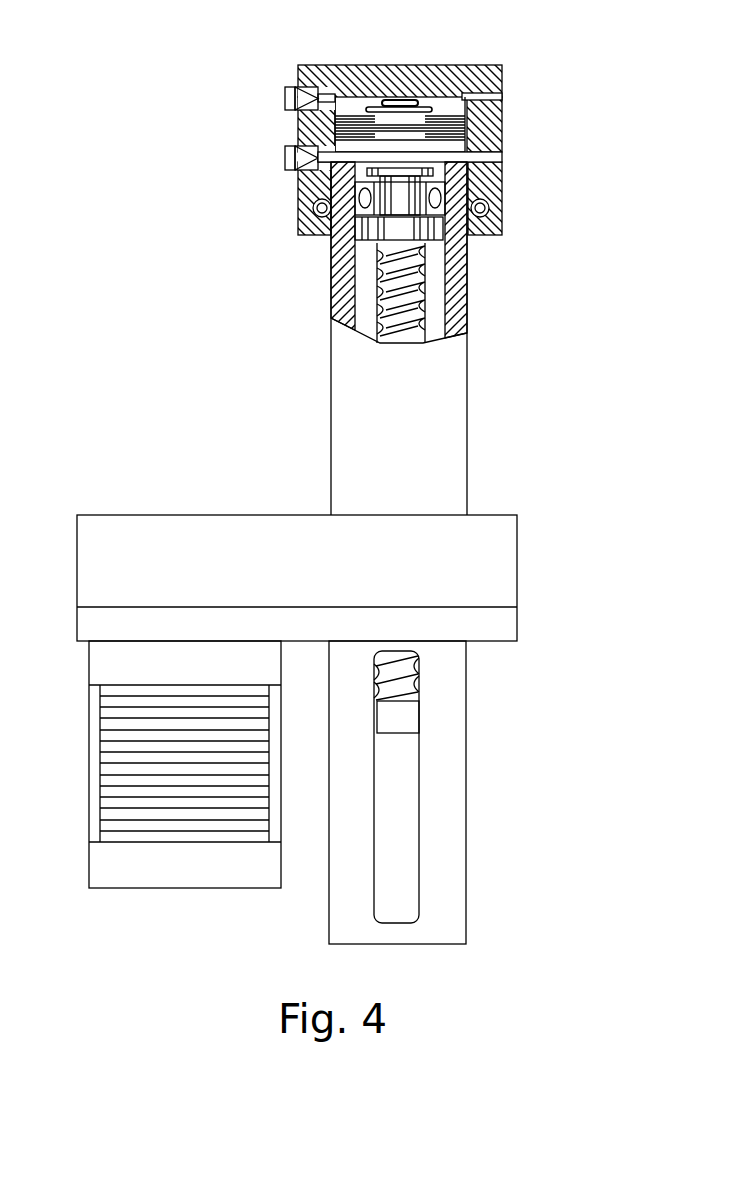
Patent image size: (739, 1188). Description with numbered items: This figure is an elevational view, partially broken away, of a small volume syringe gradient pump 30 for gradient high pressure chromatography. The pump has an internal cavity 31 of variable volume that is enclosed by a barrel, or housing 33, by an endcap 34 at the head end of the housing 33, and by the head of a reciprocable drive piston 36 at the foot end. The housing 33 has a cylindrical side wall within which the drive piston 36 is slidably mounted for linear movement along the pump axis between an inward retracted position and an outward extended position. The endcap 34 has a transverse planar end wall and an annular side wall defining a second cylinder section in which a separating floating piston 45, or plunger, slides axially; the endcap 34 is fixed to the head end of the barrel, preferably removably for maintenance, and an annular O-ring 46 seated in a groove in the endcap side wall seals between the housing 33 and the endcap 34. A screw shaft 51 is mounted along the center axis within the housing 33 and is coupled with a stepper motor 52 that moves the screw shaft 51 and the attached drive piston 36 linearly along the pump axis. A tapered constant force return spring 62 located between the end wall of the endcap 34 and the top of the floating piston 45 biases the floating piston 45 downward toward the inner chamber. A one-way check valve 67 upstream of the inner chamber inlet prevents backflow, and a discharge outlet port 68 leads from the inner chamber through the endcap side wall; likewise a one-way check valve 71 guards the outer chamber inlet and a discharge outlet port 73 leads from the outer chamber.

The gradient pump 30 is at (111, 258).
The internal cavity 31 is at (493, 173).
The housing 33 is at (427, 419).
The endcap 34 is at (302, 187).
The drive piston 36 is at (493, 193).
The floating piston 45 is at (503, 129).
The O-ring 46 is at (302, 226).
The screw shaft 51 is at (378, 281).
The stepper motor 52 is at (203, 865).
The return spring 62 is at (405, 99).
The one-way check valve 67 is at (300, 158).
The discharge outlet port 68 is at (493, 158).
The one-way check valve 71 is at (300, 100).
The discharge outlet port 73 is at (493, 97).